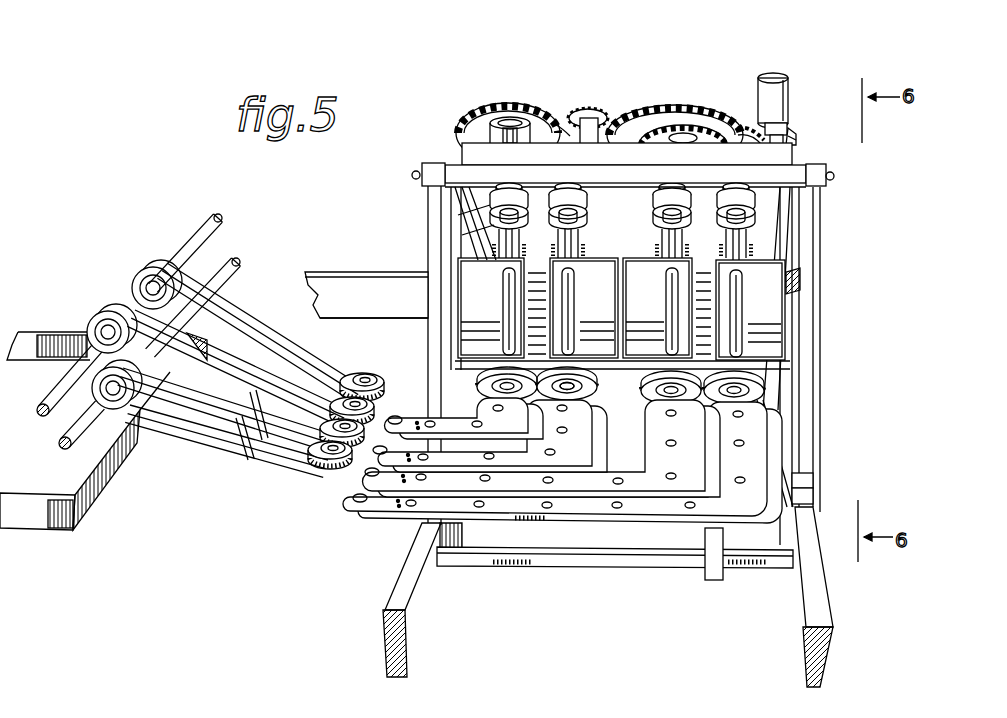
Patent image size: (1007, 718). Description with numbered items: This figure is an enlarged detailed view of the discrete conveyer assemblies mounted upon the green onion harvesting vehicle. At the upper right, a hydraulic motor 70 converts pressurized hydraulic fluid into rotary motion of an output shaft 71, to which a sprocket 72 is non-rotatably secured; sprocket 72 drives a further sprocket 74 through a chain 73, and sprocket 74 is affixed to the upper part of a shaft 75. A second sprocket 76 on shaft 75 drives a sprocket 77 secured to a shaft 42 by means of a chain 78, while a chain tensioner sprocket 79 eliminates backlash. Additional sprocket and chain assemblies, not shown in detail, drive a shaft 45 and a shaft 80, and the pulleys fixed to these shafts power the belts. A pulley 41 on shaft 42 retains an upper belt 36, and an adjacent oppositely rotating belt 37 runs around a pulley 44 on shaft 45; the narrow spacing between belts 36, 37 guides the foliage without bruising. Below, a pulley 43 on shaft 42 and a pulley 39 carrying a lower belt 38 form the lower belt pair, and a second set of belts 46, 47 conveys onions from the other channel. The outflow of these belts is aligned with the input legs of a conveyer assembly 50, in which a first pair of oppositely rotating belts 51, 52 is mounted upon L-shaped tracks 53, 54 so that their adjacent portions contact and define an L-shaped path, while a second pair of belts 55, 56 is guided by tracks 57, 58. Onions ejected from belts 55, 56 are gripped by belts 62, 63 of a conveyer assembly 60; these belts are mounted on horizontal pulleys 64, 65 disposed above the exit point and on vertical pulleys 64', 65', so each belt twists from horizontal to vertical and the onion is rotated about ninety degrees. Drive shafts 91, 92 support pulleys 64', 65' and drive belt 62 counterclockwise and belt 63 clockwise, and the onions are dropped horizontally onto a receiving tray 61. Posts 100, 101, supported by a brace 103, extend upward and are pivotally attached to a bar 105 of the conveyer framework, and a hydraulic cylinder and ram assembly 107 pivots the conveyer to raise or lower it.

The bar 105 is at (453, 200).
The sprocket 77 is at (507, 115).
The chain 78 is at (540, 102).
The sprocket 79 is at (590, 108).
The second sprocket 76 is at (652, 118).
The sprocket 74 is at (680, 133).
The chain 73 is at (727, 137).
The hydraulic motor 70 is at (785, 90).
The output shaft 71 is at (782, 128).
The sprocket 72 is at (794, 140).
The shaft 75 is at (677, 240).
The pulley 41 is at (427, 198).
The belt 36 is at (490, 210).
The shaft 42 is at (503, 247).
The pulley 44 is at (589, 203).
The shaft 45 is at (576, 235).
The belt 37 is at (592, 243).
The shaft 80 is at (742, 240).
The hydraulic cylinder and ram assembly 107 is at (795, 275).
The post 100 is at (815, 312).
The brace 103 is at (455, 276).
The post 101 is at (428, 318).
The belt 38 is at (552, 372).
The pulley 39 is at (582, 374).
The belt 47 is at (657, 374).
The pulley 43 is at (478, 396).
The belt 46 is at (767, 374).
The L-shaped track 54 is at (480, 412).
The belt 52 is at (536, 417).
The belt 51 is at (586, 428).
The L-shaped track 53 is at (572, 453).
The track 58 is at (665, 432).
The belt 56 is at (704, 456).
The belt 55 is at (714, 470).
The track 57 is at (750, 503).
The conveyer assembly 50 is at (648, 513).
The drive shaft 92 is at (210, 222).
The pulley 65' is at (123, 320).
The drive shaft 91 is at (238, 272).
The pulley 64' is at (106, 408).
The receiving tray 61 is at (95, 518).
The conveyer assembly 60 is at (232, 457).
The belt 63 is at (283, 436).
The belt 62 is at (318, 452).
The pulley 65 is at (260, 408).
The pulley 64 is at (355, 463).